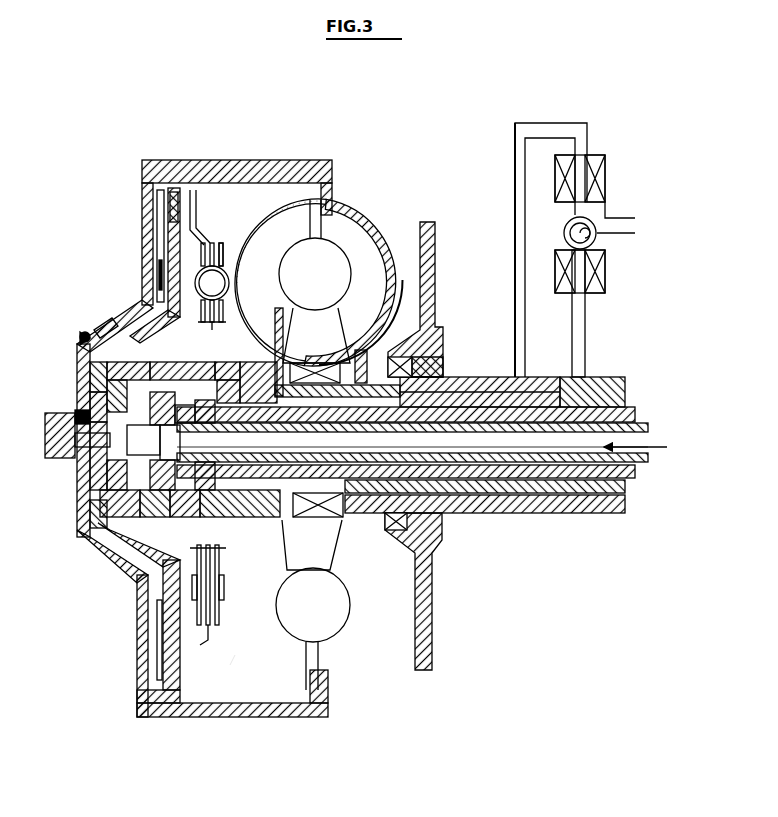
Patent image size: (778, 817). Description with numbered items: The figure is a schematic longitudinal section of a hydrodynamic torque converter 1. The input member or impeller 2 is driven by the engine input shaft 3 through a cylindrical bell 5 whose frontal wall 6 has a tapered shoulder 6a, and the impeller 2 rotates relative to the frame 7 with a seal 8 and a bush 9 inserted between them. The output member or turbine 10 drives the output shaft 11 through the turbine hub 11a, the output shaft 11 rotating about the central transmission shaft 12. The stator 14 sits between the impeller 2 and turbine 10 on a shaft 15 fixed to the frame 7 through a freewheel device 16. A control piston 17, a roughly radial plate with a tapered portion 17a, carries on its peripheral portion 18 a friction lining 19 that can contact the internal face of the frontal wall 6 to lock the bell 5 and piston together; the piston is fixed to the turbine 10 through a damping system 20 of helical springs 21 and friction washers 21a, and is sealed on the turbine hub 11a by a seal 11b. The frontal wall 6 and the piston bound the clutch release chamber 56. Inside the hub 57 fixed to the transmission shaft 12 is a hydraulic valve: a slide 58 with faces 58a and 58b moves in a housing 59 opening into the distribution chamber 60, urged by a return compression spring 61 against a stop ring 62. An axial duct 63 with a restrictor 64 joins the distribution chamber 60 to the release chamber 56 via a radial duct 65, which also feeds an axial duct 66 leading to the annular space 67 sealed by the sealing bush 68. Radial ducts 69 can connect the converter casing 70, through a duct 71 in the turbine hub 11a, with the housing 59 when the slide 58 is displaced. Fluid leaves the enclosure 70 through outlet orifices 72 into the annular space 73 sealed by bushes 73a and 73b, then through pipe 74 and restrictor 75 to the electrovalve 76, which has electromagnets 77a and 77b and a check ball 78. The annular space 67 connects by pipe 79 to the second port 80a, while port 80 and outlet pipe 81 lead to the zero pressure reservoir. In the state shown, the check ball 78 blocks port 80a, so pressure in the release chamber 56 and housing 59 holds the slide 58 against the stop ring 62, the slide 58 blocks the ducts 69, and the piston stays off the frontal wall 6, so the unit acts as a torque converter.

The converter 1 is at (358, 196).
The input member 2 is at (352, 240).
The input shaft 3 is at (45, 437).
The cylindrical bell 5 is at (205, 180).
The frontal wall 6 is at (147, 270).
The tapered shoulder 6a is at (110, 328).
The frame 7 is at (436, 252).
The seal 8 is at (440, 348).
The bush 9 is at (421, 367).
The output member 10 is at (290, 222).
The output shaft 11 is at (488, 412).
The turbine hub 11a is at (245, 390).
The seal 11b is at (82, 340).
The central transmission shaft 12 is at (600, 388).
The stator 14 is at (362, 265).
The shaft 15 is at (462, 392).
The freewheel device 16 is at (307, 368).
The control piston 17 is at (165, 283).
The tapered portion 17a is at (138, 305).
The peripheral portion 18 is at (175, 212).
The friction lining 19 is at (165, 230).
The damping system 20 is at (216, 245).
The helical springs 21 is at (232, 270).
The friction washers 21a is at (203, 625).
The clutch release chamber 56 is at (85, 335).
The hub 57 is at (208, 374).
The slide 58 is at (182, 374).
The upstream face 58a is at (103, 465).
The upstream face 58b is at (162, 440).
The housing 59 is at (100, 395).
The distribution chamber 60 is at (190, 478).
The return compression spring 61 is at (74, 413).
The stop ring 62 is at (157, 475).
The axial duct 63 is at (147, 375).
The restrictor 64 is at (95, 375).
The radial duct 65 is at (100, 410).
The axial duct 66 is at (210, 468).
The annular space 67 is at (501, 462).
The sealing bush 68 is at (600, 486).
The radial ducts 69 is at (78, 522).
The converter casing 70 is at (220, 198).
The duct 71 is at (117, 547).
The outlet orifices 72 is at (333, 340).
The annular space 73 is at (472, 480).
The bush 73a is at (547, 486).
The bush 73b is at (298, 522).
The pipe 74 is at (515, 208).
The restrictor 75 is at (524, 178).
The control electrovalve 76 is at (600, 140).
The electromagnet 77a is at (598, 168).
The electromagnet 77b is at (562, 294).
The check ball 78 is at (596, 240).
The pipe 79 is at (580, 322).
The port 80 is at (578, 200).
The second port 80a is at (600, 272).
The outlet pipe 81 is at (627, 218).